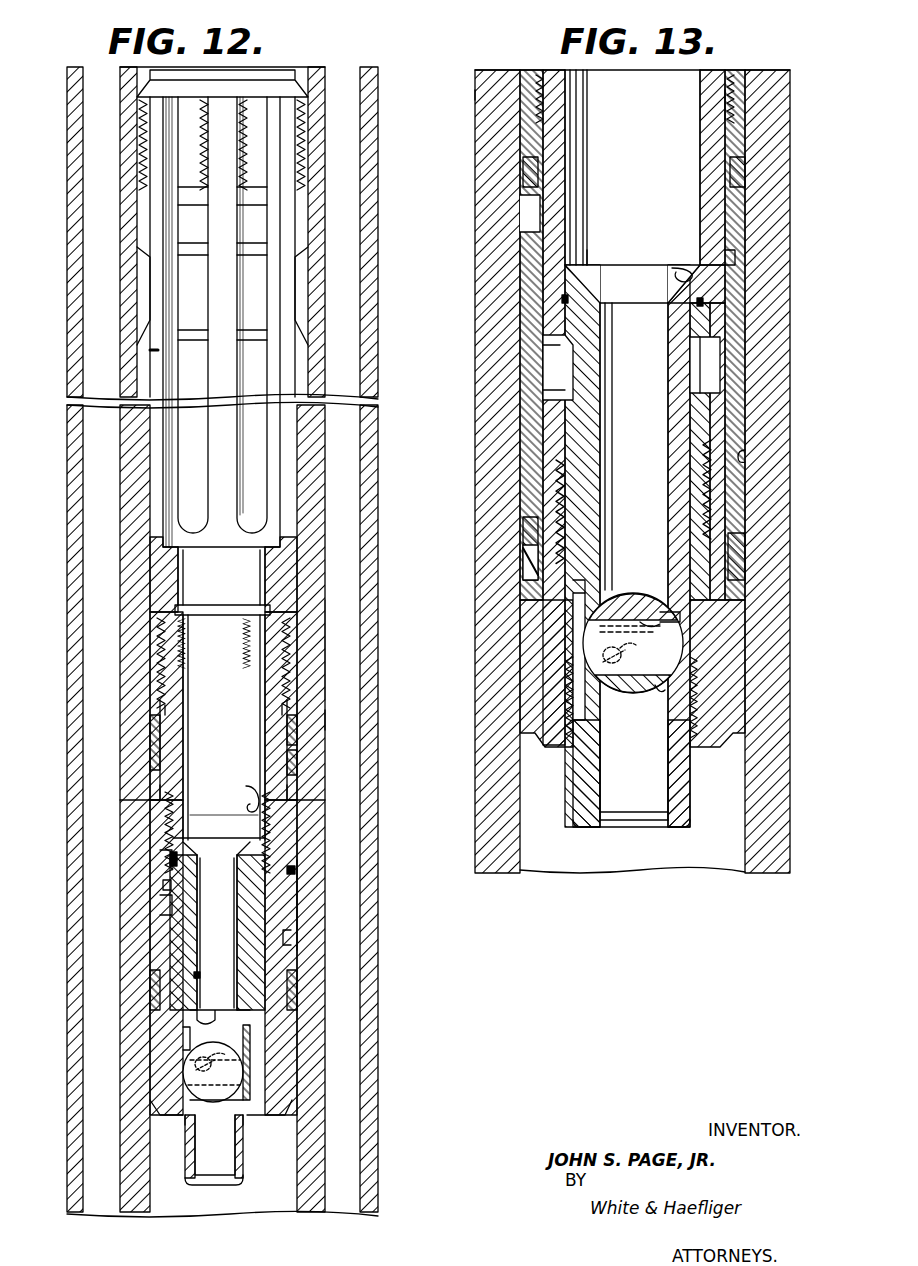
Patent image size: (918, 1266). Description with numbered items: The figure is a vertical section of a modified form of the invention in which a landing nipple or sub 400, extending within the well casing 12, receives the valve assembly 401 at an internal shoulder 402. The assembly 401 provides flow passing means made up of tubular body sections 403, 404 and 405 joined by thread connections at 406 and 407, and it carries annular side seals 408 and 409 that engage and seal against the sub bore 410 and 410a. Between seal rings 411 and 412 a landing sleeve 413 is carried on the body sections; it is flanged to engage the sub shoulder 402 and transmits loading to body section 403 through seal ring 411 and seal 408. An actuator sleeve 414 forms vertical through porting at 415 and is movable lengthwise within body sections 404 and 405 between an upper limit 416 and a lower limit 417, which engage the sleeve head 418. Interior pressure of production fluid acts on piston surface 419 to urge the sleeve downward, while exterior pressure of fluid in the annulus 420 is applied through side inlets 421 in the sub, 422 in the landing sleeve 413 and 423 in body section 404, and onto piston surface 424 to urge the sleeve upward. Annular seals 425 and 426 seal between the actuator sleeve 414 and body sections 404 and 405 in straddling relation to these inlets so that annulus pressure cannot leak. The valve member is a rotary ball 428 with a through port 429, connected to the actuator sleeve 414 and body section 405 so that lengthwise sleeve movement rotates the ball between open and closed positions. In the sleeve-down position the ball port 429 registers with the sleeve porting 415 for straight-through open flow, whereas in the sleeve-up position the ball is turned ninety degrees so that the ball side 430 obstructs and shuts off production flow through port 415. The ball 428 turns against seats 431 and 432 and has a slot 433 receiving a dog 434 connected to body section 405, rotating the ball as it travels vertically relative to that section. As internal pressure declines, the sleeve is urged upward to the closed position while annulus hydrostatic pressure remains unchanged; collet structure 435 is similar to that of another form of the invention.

In FIG. 12, the well casing 12 is at (85, 497).
In FIG. 12, the landing nipple or sub 400 is at (325, 720).
In FIG. 13, the landing nipple or sub 400 is at (468, 95).
In FIG. 12, the valve assembly 401 is at (300, 832).
In FIG. 13, the valve assembly 401 is at (748, 330).
In FIG. 12, the shoulder 402 is at (150, 828).
In FIG. 12, the tubular body section 403 is at (150, 580).
In FIG. 12, the tubular body section 404 is at (160, 690).
In FIG. 13, the tubular body section 404 is at (548, 108).
In FIG. 12, the tubular body section 405 is at (152, 1025).
In FIG. 13, the tubular body section 405 is at (530, 613).
In FIG. 12, the thread connection 406 is at (160, 650).
In FIG. 13, the thread connection 406 is at (725, 97).
In FIG. 12, the thread connection 407 is at (168, 940).
In FIG. 13, the thread connection 407 is at (558, 462).
In FIG. 12, the annular side seal 408 is at (292, 748).
In FIG. 13, the annular side seal 408 is at (522, 173).
In FIG. 12, the annular side seal 409 is at (287, 995).
In FIG. 13, the annular side seal 409 is at (530, 548).
In FIG. 12, the sub bore 410 is at (292, 770).
In FIG. 13, the sub bore 410 is at (746, 210).
In FIG. 12, the sub bore 410a is at (287, 938).
In FIG. 13, the sub bore 410a is at (744, 458).
In FIG. 12, the seal ring 411 is at (152, 768).
In FIG. 13, the seal ring 411 is at (525, 205).
In FIG. 12, the seal ring 412 is at (152, 978).
In FIG. 13, the seal ring 412 is at (524, 530).
In FIG. 12, the landing sleeve 413 is at (165, 858).
In FIG. 12, the actuator sleeve 414 is at (300, 905).
In FIG. 13, the actuator sleeve 414 is at (685, 420).
In FIG. 12, the vertical through porting 415 is at (240, 935).
In FIG. 13, the vertical through porting 415 is at (650, 458).
In FIG. 12, the upper limit 416 is at (237, 791).
In FIG. 13, the upper limit 416 is at (678, 268).
In FIG. 12, the lower limit 417 is at (292, 870).
In FIG. 13, the sleeve head 418 is at (703, 292).
In FIG. 12, the piston surface 419 is at (255, 836).
In FIG. 13, the piston surface 419 is at (576, 264).
In FIG. 12, the annulus 420 is at (345, 645).
In FIG. 12, the side inlet 421 is at (125, 800).
In FIG. 12, the side inlet 422 is at (295, 800).
In FIG. 13, the side inlet 422 is at (732, 258).
In FIG. 12, the side inlet 423 is at (165, 885).
In FIG. 13, the side inlet 423 is at (702, 380).
In FIG. 12, the piston surface 424 is at (165, 905).
In FIG. 13, the piston surface 424 is at (566, 340).
In FIG. 12, the annular seal 425 is at (177, 860).
In FIG. 13, the annular seal 425 is at (562, 299).
In FIG. 12, the annular seal 426 is at (200, 975).
In FIG. 13, the annular seal 426 is at (697, 530).
In FIG. 12, the rotary ball 428 is at (228, 1120).
In FIG. 13, the rotary ball 428 is at (637, 700).
In FIG. 12, the through port 429 is at (255, 1060).
In FIG. 13, the through port 429 is at (650, 625).
In FIG. 12, the ball side 430 is at (245, 1070).
In FIG. 13, the ball side 430 is at (640, 598).
In FIG. 12, the seat 431 is at (220, 1062).
In FIG. 13, the seat 431 is at (670, 617).
In FIG. 13, the seat 432 is at (662, 690).
In FIG. 12, the slot 433 is at (200, 1075).
In FIG. 13, the slot 433 is at (636, 650).
In FIG. 12, the dog 434 is at (212, 1060).
In FIG. 13, the dog 434 is at (605, 660).
In FIG. 12, the collet structure 435 is at (155, 352).